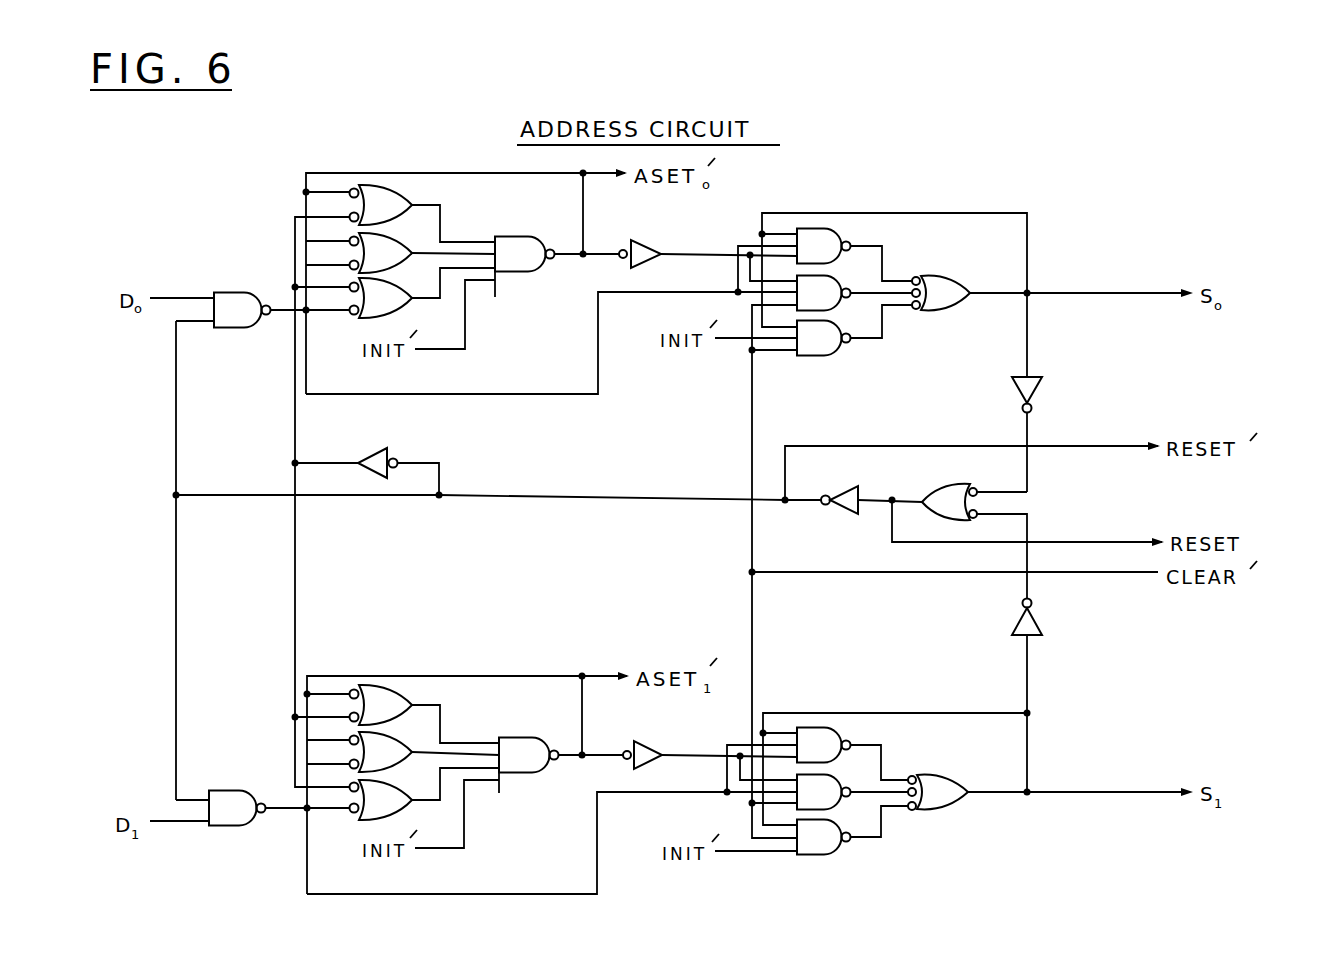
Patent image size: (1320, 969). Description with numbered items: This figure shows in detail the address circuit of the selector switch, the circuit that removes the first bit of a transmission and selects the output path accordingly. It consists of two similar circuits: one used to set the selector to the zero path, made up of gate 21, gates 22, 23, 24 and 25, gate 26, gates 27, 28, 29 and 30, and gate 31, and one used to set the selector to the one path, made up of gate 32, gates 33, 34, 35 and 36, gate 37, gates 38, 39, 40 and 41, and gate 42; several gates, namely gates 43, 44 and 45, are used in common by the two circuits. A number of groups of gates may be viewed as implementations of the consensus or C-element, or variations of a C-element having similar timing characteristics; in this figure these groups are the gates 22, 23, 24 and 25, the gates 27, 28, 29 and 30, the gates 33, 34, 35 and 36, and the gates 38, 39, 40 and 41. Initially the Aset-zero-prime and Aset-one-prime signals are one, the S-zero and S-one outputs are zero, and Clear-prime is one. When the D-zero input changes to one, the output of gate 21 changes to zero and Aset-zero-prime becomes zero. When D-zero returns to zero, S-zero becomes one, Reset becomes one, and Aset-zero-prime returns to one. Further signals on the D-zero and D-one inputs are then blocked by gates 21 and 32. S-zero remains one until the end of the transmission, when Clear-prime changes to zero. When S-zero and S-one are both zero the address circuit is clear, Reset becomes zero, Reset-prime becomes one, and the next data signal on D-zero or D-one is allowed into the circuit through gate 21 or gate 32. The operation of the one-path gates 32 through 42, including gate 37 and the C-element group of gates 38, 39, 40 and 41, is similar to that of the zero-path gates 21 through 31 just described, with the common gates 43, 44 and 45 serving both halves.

The gate 21 is at (240, 328).
The gate 22 is at (387, 185).
The gate 23 is at (400, 229).
The gate 24 is at (412, 316).
The gate 25 is at (519, 272).
The gate 26 is at (652, 241).
The gate 27 is at (827, 228).
The gate 28 is at (827, 357).
The gate 29 is at (840, 273).
The gate 30 is at (950, 308).
The gate 31 is at (1037, 394).
The gate 32 is at (222, 827).
The gate 33 is at (390, 687).
The gate 34 is at (410, 732).
The gate 35 is at (410, 810).
The gate 36 is at (527, 772).
The gate 37 is at (653, 740).
The gate 38 is at (825, 727).
The gate 39 is at (837, 773).
The gate 40 is at (830, 858).
The gate 41 is at (952, 808).
The gate 42 is at (1045, 616).
The gate 43 is at (932, 485).
The gate 44 is at (837, 517).
The gate 45 is at (373, 450).